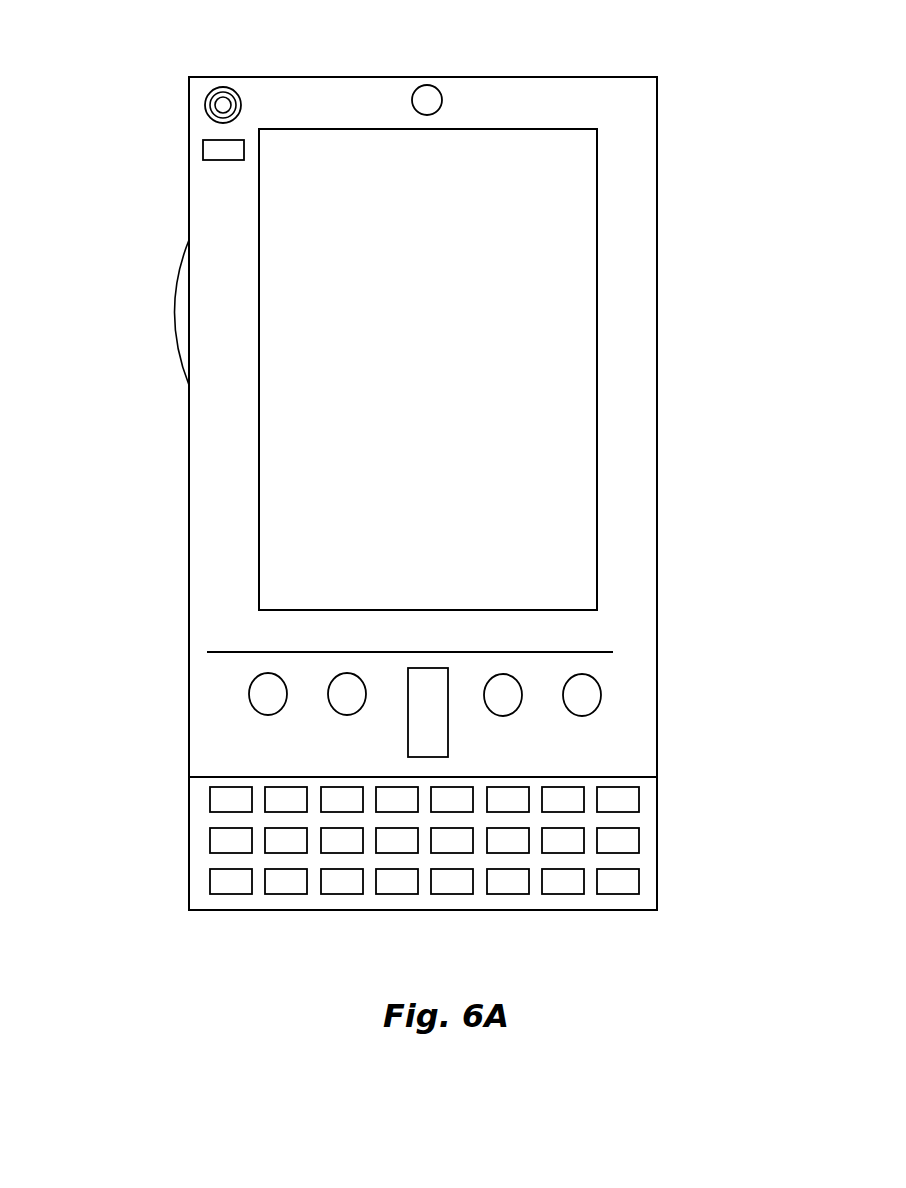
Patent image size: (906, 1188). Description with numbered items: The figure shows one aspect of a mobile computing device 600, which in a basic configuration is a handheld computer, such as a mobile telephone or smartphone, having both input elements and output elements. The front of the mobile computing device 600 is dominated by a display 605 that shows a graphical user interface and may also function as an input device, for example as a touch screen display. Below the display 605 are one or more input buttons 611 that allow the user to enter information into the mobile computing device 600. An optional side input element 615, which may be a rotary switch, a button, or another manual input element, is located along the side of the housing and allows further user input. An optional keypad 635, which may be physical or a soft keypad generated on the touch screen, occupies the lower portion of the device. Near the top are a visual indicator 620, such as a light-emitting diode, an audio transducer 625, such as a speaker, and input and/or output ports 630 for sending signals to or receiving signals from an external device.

The mobile computing device 600 is at (647, 95).
The display 605 is at (362, 528).
The input buttons 611 is at (427, 717).
The side input element 615 is at (180, 312).
The visual indicator 620 is at (203, 155).
The audio transducer 625 is at (204, 105).
The input and/or output ports 630 is at (437, 100).
The keypad 635 is at (197, 887).